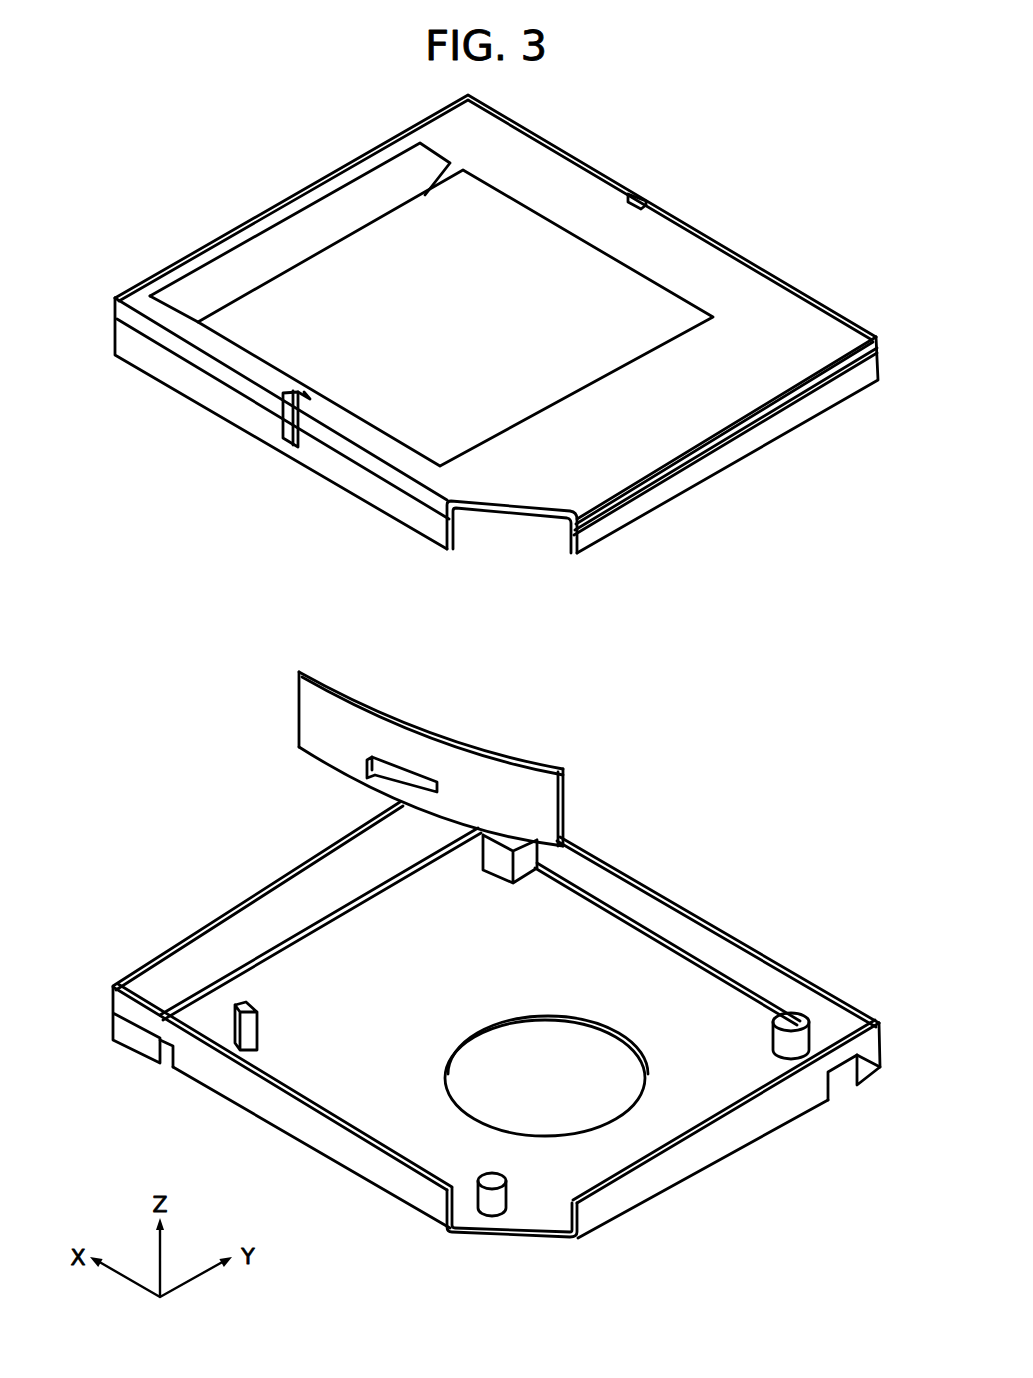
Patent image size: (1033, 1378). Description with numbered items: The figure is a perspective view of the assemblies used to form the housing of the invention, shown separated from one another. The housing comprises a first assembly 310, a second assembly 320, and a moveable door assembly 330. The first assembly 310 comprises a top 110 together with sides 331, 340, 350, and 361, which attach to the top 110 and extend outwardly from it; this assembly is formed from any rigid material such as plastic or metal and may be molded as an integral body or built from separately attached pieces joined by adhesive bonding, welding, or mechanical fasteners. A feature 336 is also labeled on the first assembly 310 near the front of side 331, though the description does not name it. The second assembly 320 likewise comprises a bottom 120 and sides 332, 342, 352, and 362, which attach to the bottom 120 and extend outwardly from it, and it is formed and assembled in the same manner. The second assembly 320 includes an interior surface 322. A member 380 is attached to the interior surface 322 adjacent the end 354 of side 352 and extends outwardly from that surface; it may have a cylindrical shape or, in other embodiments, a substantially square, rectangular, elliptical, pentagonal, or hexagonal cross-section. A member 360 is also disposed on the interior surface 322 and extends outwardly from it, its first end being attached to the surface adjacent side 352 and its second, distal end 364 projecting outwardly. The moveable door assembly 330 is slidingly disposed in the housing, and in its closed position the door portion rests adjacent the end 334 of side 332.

The top 110 is at (487, 213).
The bottom 120 is at (676, 973).
The first assembly 310 is at (245, 490).
The second assembly 320 is at (778, 1243).
The interior surface 322 is at (670, 1055).
The moveable door assembly 330 is at (462, 773).
The side 331 is at (786, 417).
The side 332 is at (777, 1108).
The end of side 332 334 is at (585, 1228).
The front notch of upper case 336 is at (578, 545).
The side 340 is at (225, 213).
The side 342 is at (158, 962).
The side 350 is at (172, 373).
The side 352 is at (410, 1185).
The end of side 352 354 is at (470, 1237).
The member 360 is at (228, 1046).
The side 361 is at (645, 195).
The side 362 is at (617, 850).
The second end of member 360 364 is at (255, 1008).
The member 380 is at (505, 1198).